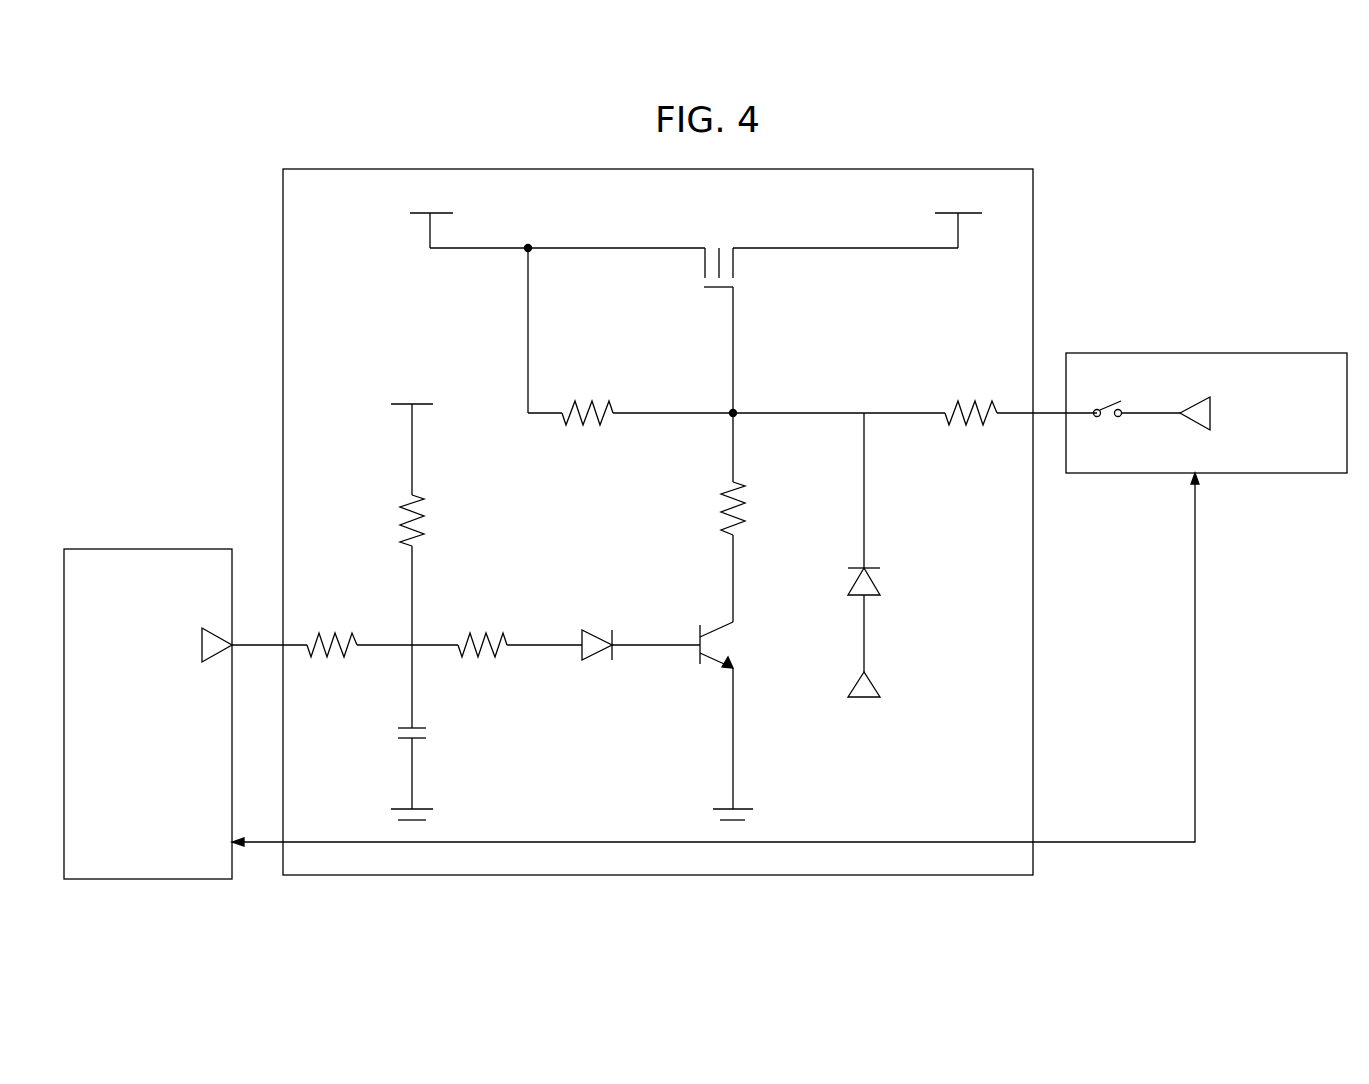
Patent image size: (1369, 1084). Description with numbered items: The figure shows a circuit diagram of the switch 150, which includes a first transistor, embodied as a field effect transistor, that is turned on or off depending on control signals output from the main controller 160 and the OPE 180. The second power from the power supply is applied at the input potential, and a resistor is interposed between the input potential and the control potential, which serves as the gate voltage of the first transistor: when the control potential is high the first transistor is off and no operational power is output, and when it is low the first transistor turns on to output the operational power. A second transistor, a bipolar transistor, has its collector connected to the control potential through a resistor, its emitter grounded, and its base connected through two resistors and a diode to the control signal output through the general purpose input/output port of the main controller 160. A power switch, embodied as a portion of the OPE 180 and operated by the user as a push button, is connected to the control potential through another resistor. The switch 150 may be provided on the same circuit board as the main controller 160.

The switch 150 is at (823, 169).
The main controller 160 is at (152, 549).
The OPE 180 is at (1251, 353).